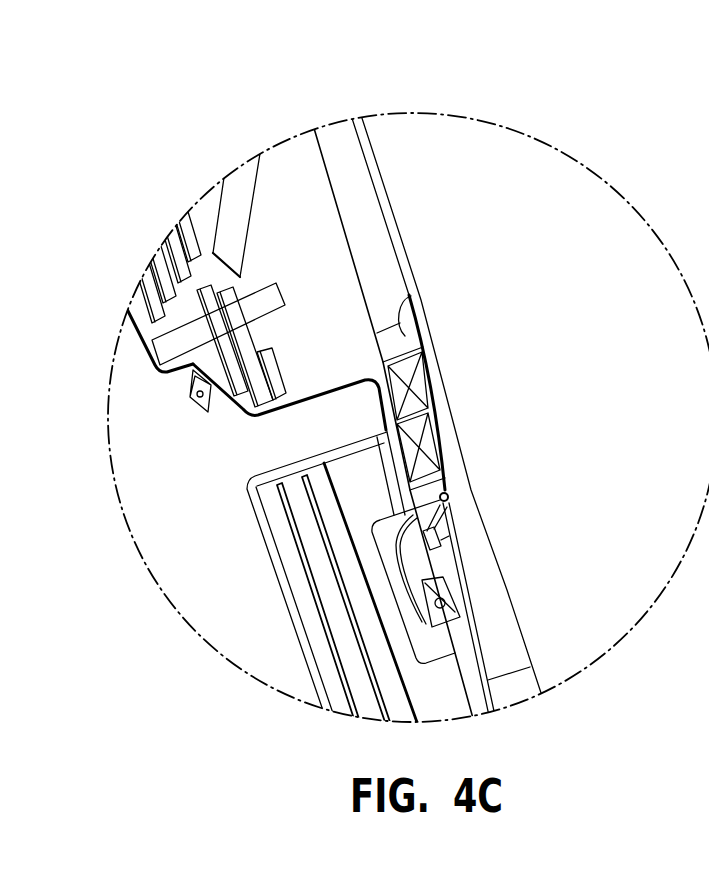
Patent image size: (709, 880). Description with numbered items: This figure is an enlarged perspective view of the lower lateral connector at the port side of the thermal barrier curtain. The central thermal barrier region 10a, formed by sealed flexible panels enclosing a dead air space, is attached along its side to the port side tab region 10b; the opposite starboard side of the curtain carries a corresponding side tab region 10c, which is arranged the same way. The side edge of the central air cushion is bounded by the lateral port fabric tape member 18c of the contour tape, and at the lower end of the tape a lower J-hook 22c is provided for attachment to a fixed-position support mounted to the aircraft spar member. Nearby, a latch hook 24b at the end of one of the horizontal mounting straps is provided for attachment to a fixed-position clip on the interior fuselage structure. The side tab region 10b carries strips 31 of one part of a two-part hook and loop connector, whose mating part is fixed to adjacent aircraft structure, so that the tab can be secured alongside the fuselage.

The central thermal barrier region 10a is at (562, 306).
The port side tab region 10b is at (360, 369).
The starboard side tab region 10c is at (292, 168).
The lateral port fabric tape member 18c is at (411, 297).
The lower J-hook 22c is at (445, 525).
The latch hook 24b is at (450, 595).
The strips 31 is at (271, 374).